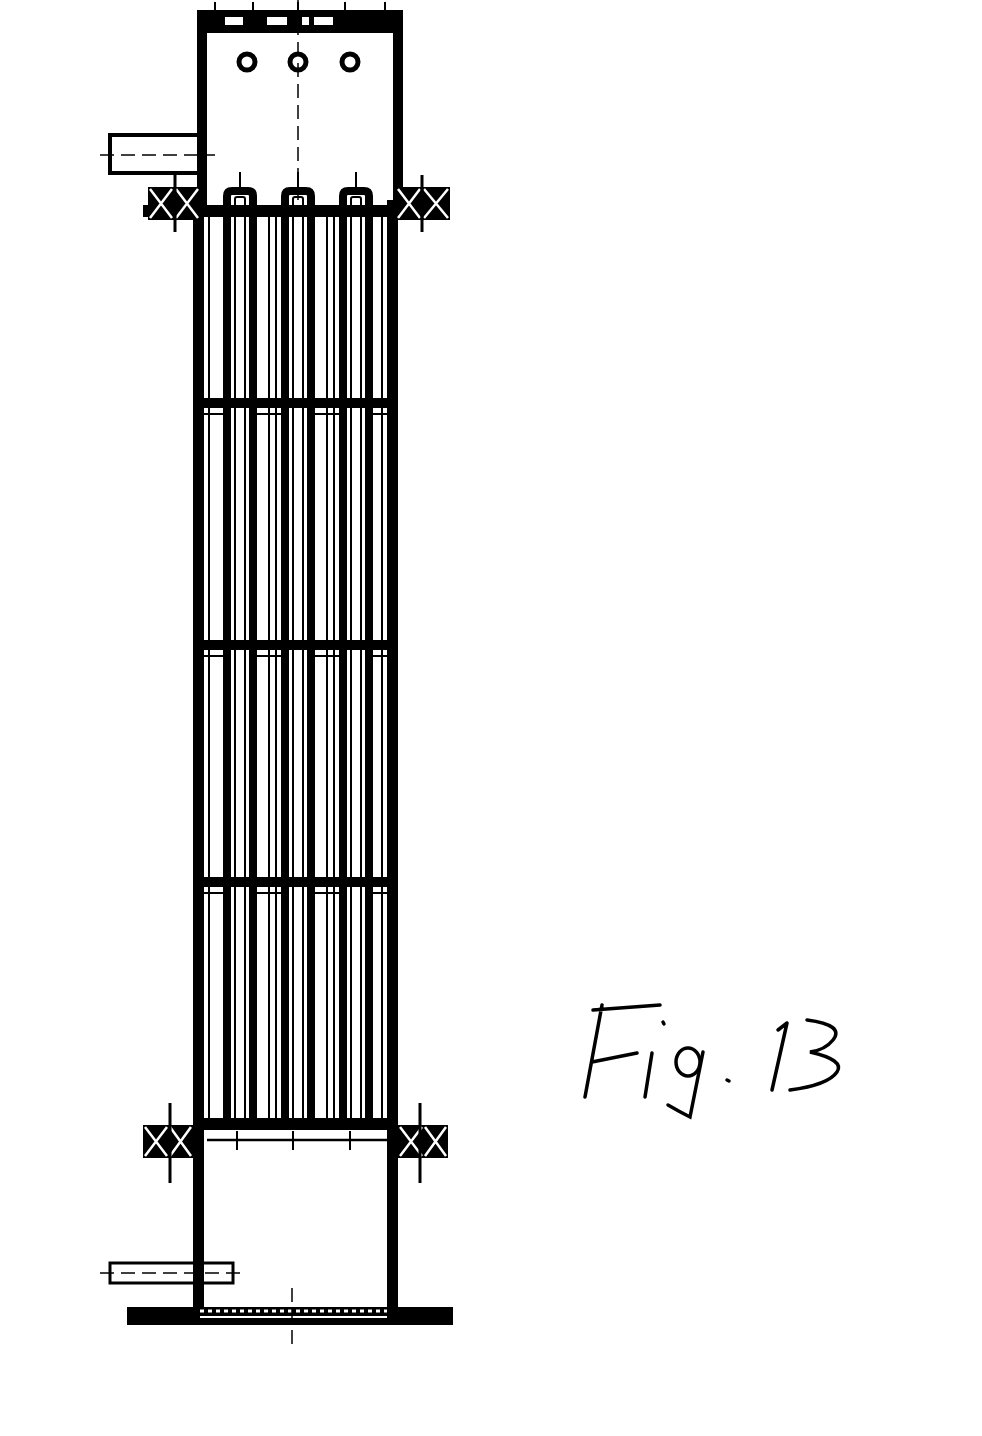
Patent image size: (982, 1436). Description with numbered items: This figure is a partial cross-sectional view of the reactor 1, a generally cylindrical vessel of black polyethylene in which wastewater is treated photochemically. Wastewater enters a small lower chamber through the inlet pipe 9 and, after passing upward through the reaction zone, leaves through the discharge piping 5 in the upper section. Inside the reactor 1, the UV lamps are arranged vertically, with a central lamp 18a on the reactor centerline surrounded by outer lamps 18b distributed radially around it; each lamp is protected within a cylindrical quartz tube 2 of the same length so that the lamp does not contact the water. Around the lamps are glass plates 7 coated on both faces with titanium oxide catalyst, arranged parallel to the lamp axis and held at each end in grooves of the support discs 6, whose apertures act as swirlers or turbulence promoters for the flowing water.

The reactor 1 is at (475, 102).
The quartz tube 2 is at (310, 365).
The discharge piping 5 is at (137, 142).
The support disc 6 is at (212, 388).
The glass plate 7 is at (268, 462).
The inlet pipe 9 is at (162, 1263).
The central lamp 18a is at (293, 543).
The outer lamp 18b is at (352, 632).